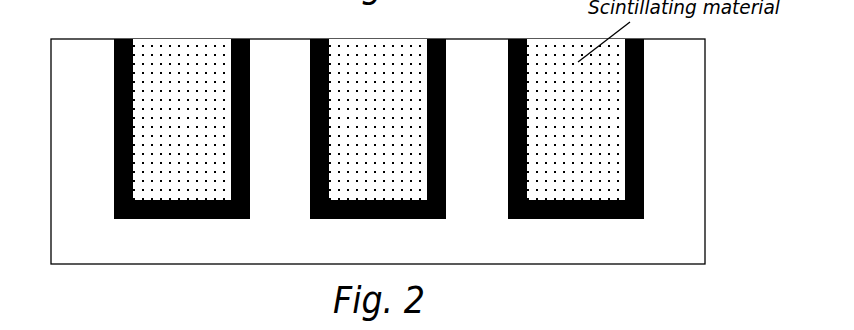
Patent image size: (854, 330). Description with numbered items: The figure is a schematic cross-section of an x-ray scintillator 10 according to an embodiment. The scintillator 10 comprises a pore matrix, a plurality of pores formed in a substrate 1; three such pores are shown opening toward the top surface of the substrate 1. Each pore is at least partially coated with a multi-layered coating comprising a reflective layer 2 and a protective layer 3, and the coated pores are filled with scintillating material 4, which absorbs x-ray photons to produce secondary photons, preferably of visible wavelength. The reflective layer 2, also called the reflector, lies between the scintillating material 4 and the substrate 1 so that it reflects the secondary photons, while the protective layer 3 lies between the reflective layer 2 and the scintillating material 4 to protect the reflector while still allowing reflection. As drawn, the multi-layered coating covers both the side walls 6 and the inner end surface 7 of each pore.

The substrate 1 is at (698, 140).
The reflective layer 2 is at (508, 147).
The protective layer 3 is at (523, 107).
The scintillating material 4 is at (181, 43).
The side walls 6 is at (643, 90).
The inner end surface 7 is at (571, 222).
The scintillator 10 is at (668, 260).